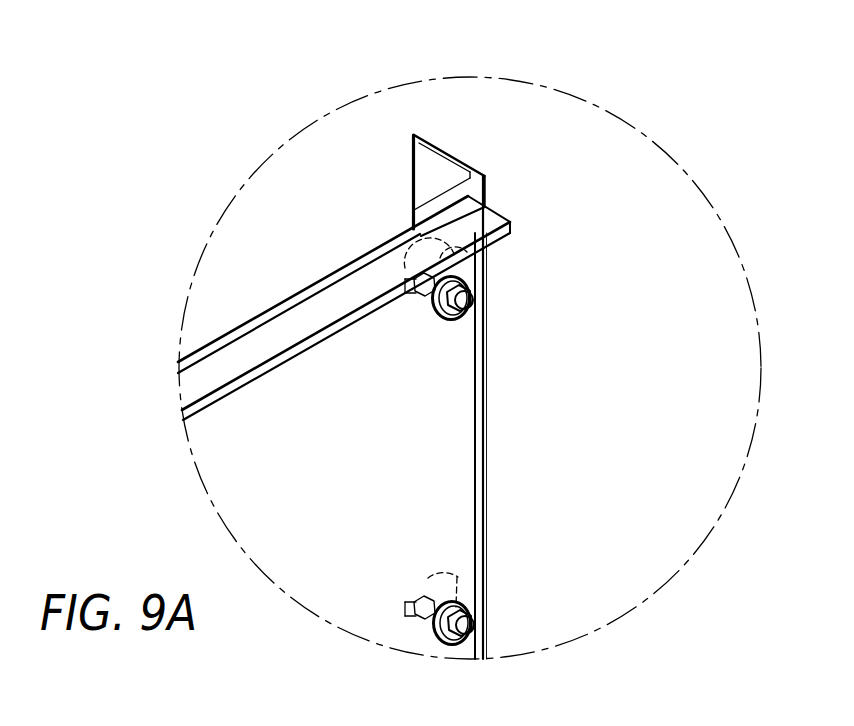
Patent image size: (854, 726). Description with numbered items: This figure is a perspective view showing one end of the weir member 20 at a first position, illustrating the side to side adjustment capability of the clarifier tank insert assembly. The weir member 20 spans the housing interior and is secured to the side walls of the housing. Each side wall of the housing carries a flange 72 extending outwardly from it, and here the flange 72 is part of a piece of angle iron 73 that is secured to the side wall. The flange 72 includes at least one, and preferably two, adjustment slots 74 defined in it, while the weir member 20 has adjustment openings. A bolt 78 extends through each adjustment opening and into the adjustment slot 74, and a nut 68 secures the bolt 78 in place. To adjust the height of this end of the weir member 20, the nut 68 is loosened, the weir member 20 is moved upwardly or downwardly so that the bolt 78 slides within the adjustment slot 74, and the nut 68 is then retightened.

The weir member 20 is at (454, 456).
The nut 68 is at (395, 283).
The flange 72 is at (438, 186).
The angle iron 73 is at (448, 152).
The adjustment slot 74 is at (467, 252).
The bolt 78 is at (463, 303).